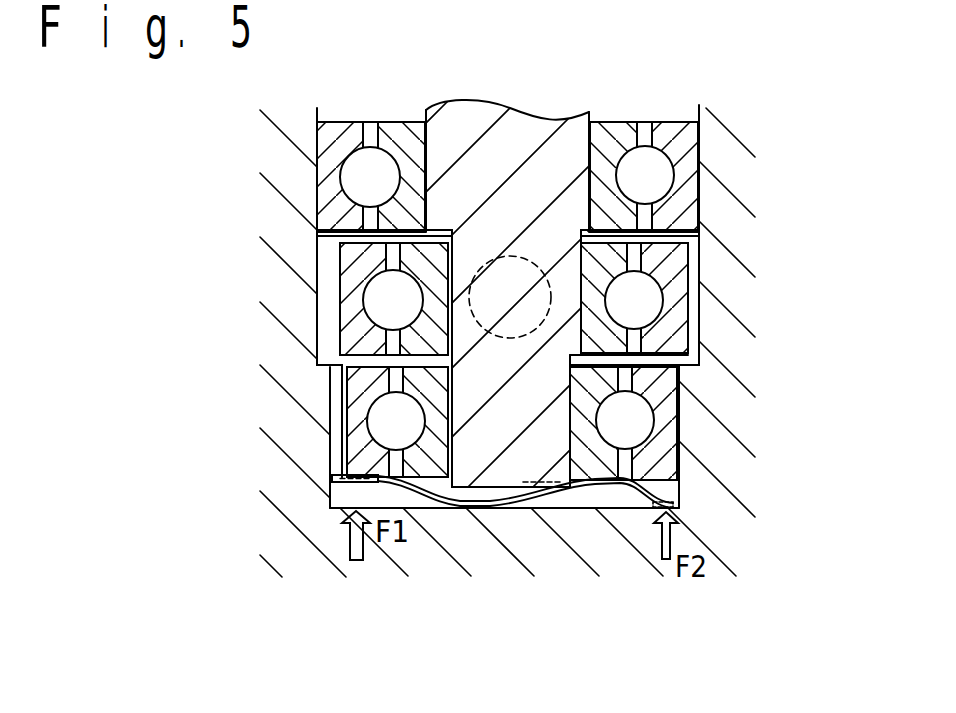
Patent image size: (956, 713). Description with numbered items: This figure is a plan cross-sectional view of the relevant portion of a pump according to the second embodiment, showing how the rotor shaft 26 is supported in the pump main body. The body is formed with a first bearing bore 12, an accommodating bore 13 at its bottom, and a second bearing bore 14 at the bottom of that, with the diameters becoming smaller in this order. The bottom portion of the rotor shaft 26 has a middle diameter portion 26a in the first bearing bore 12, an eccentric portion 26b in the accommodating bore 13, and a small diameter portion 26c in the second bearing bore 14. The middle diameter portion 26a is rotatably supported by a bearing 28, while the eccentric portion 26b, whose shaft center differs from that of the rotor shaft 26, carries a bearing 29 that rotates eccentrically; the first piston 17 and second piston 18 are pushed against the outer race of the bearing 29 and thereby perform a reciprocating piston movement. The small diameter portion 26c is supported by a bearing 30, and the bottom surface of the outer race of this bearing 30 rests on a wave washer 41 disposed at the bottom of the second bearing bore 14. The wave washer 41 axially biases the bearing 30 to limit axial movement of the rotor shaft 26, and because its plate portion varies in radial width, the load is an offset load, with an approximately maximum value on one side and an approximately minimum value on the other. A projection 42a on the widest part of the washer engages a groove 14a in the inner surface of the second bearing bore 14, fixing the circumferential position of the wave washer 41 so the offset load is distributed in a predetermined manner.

The first bearing bore 12 is at (698, 160).
The accommodating bore 13 is at (693, 322).
The second bearing bore 14 is at (680, 430).
The groove 14a is at (336, 412).
The first piston 17 is at (484, 300).
The second piston 18 is at (524, 258).
The rotor shaft 26 is at (575, 140).
The middle diameter portion 26a is at (437, 163).
The eccentric portion 26b is at (563, 271).
The small diameter portion 26c is at (556, 455).
The bearing 28 is at (320, 133).
The bearing 29 is at (350, 268).
The bearing 30 is at (333, 380).
The wave washer 41 is at (673, 492).
The projection 42a is at (340, 477).